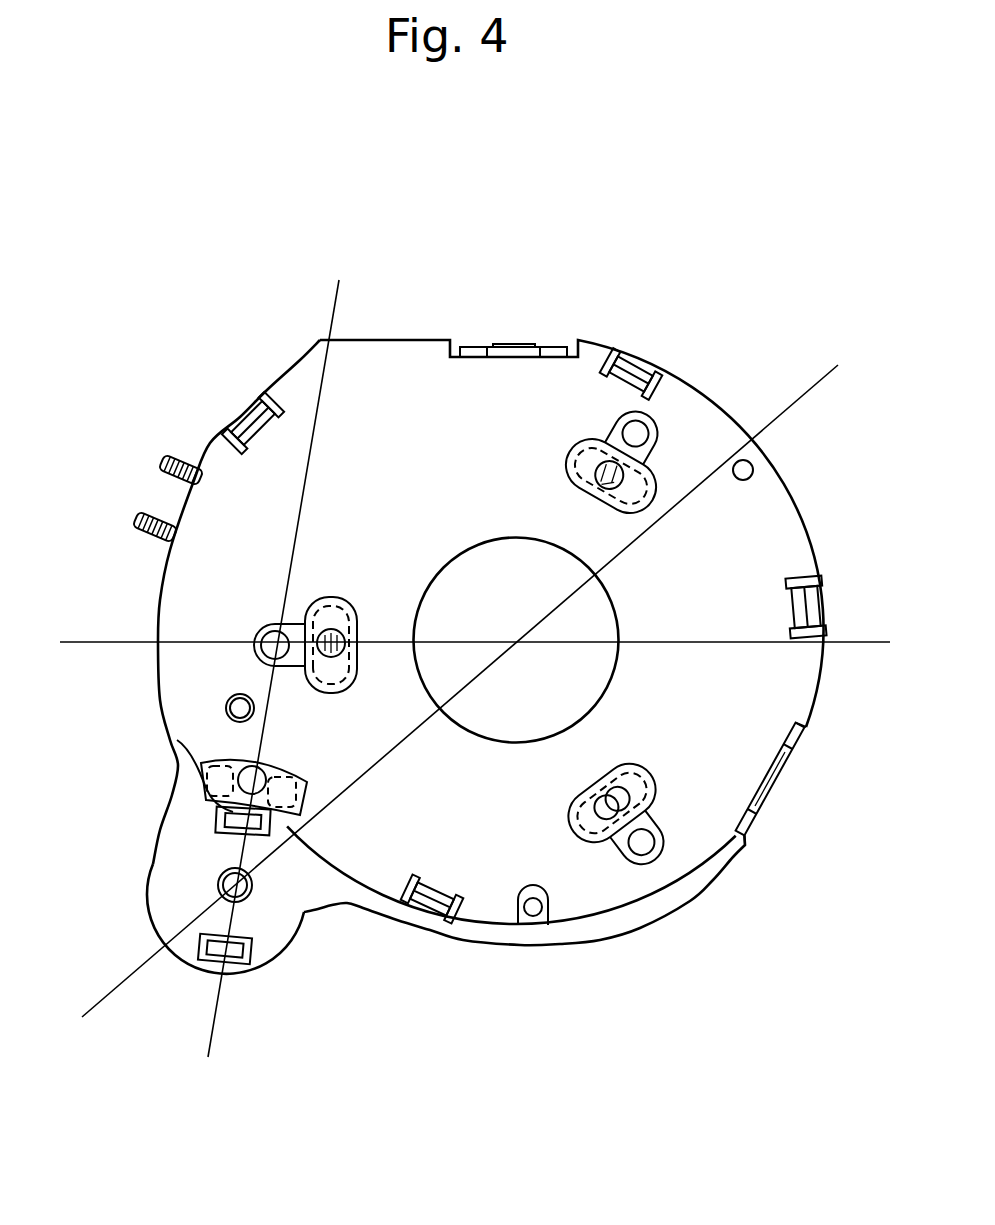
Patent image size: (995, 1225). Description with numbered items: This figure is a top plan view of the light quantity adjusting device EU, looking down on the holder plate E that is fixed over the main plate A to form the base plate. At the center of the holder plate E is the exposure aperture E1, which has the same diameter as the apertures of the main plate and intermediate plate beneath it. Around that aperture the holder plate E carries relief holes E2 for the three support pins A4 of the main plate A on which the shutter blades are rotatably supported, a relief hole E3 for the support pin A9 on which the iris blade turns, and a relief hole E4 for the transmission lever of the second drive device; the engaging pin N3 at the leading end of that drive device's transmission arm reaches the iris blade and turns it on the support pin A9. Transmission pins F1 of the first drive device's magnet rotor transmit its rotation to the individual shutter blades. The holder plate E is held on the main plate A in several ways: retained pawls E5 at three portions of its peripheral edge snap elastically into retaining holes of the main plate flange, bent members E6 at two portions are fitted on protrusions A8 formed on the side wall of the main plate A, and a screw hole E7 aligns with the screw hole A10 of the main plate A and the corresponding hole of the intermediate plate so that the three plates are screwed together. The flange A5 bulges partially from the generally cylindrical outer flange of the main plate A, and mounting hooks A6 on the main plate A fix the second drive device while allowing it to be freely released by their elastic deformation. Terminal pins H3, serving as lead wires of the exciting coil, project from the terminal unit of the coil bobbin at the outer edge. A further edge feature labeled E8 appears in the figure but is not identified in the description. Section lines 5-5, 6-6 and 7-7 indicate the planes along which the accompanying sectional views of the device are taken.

The light quantity adjusting device EU is at (752, 333).
The holder plate E is at (233, 478).
The main plate A is at (190, 863).
The terminal pins H3 is at (165, 480).
The transmission pins F1 is at (610, 463).
The relief holes E2 is at (643, 417).
The support pins A4 is at (650, 427).
The screw hole E7 is at (753, 468).
The retained pawls E5 is at (823, 603).
The exposure aperture E1 is at (597, 706).
The bent members E6 is at (790, 757).
The protrusions A8 is at (777, 793).
The flange E8 is at (577, 912).
The screw hole A10 is at (523, 922).
The flange A5 is at (297, 953).
The mounting hooks A6 is at (250, 973).
The support pin A9 is at (210, 697).
The relief hole E3 is at (227, 717).
The relief hole E4 is at (177, 740).
The engaging pin N3 is at (227, 780).
The section line 5- 5 is at (890, 660).
The section line 6- 6 is at (222, 1056).
The section line 7- 7 is at (98, 1017).